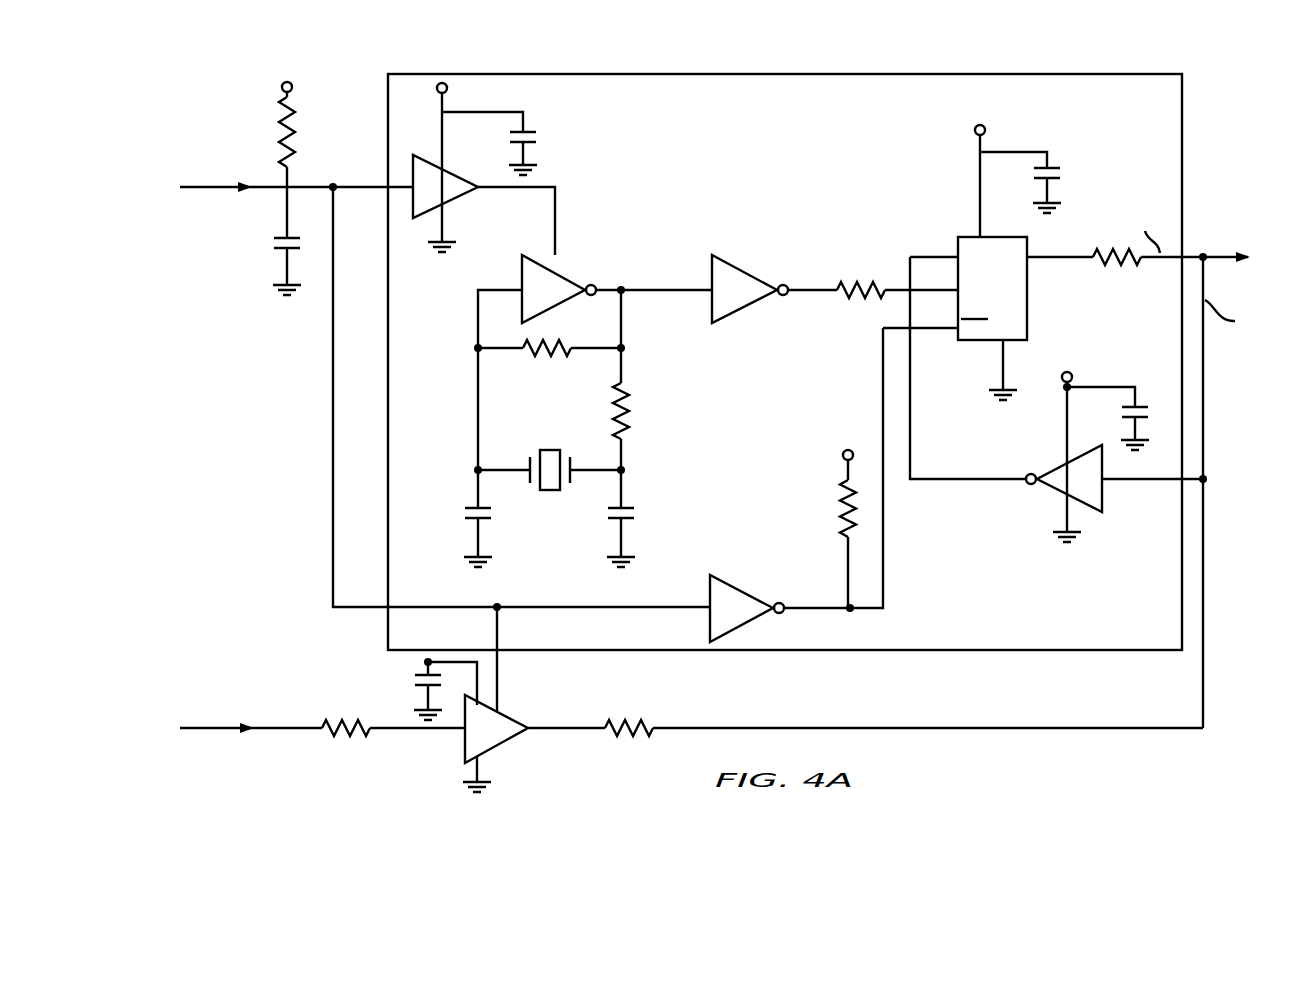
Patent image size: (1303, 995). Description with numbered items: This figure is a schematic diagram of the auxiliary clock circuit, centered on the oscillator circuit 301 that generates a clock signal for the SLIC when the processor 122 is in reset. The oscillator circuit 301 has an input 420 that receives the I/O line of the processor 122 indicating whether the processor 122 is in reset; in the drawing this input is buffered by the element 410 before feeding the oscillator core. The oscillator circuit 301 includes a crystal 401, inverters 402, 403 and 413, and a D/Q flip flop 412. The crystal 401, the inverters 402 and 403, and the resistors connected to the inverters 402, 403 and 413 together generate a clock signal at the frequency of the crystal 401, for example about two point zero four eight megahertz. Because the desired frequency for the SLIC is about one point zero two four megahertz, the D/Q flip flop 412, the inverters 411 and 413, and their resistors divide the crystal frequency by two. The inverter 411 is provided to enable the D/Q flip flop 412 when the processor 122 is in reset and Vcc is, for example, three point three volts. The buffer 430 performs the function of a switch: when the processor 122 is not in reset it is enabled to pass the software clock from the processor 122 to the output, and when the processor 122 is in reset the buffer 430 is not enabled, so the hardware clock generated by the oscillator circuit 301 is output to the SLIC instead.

The oscillator circuit 301 is at (1092, 52).
The input 420 is at (296, 177).
The input buffer 410 is at (484, 166).
The inverter 402 is at (588, 411).
The crystal 401 is at (548, 450).
The inverter 403 is at (835, 289).
The D/Q flip flop 412 is at (968, 237).
The inverter 413 is at (1058, 492).
The inverter 411 is at (608, 414).
The buffer 430 is at (808, 699).
The processor 122 is at (315, 681).